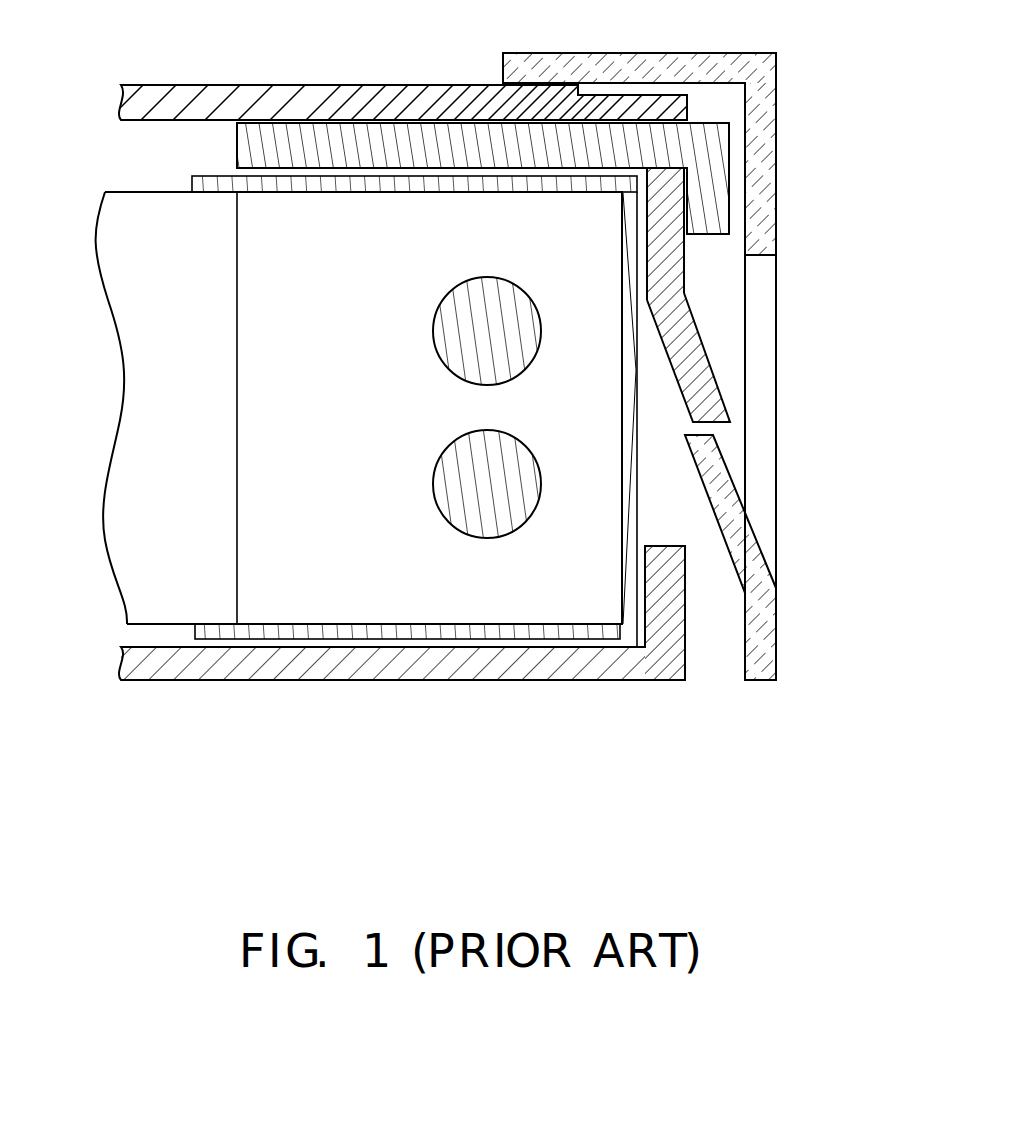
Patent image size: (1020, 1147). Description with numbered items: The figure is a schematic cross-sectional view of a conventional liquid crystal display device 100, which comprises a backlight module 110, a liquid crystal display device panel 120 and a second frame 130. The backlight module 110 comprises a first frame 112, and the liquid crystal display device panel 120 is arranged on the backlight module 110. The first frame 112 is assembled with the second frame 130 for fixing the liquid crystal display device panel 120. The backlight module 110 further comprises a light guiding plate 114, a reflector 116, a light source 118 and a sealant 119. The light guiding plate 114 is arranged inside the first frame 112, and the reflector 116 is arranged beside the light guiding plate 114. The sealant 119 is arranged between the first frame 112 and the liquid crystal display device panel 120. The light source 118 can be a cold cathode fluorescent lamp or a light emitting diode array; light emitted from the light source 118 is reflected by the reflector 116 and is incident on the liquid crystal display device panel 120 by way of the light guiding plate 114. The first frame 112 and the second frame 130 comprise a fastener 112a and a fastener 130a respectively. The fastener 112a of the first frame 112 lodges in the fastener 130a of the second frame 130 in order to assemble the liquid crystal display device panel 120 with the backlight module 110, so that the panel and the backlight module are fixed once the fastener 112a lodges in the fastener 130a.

The liquid crystal display device 100 is at (857, 805).
The backlight module 110 is at (607, 842).
The first frame 112 is at (597, 663).
The fastener 112a is at (690, 368).
The light guiding plate 114 is at (170, 607).
The reflector 116 is at (300, 632).
The light source 118 is at (493, 513).
The sealant 119 is at (265, 147).
The liquid crystal display device panel 120 is at (207, 96).
The second frame 130 is at (770, 127).
The fastener 130a is at (725, 495).